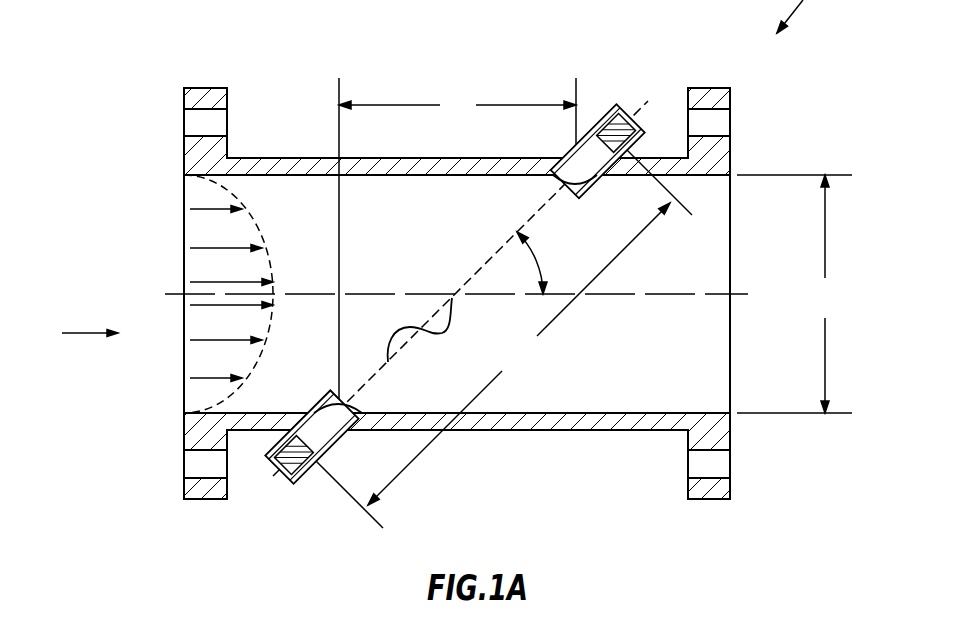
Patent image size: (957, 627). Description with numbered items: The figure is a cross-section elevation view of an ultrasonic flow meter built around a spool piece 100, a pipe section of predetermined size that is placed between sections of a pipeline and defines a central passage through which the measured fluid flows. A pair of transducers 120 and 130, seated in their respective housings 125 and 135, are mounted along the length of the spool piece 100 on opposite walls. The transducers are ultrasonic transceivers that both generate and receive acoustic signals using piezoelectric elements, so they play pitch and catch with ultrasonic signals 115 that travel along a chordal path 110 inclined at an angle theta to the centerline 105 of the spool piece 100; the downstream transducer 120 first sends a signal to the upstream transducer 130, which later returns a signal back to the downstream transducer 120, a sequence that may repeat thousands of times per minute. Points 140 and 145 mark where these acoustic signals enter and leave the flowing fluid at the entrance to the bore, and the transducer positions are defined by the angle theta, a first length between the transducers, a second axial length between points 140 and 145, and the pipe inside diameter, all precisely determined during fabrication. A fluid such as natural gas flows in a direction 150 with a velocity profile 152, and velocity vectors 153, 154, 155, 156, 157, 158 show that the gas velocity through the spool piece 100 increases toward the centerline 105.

The spool piece 100 is at (200, 88).
The centerline 105 is at (735, 293).
The chordal path 110 is at (497, 252).
The ultrasonic signals 115 is at (427, 338).
The downstream transducer 120 is at (643, 93).
The transducer housing 125 is at (603, 108).
The upstream transducer 130 is at (290, 480).
The transducer housing 135 is at (326, 446).
The entry point 140 is at (573, 178).
The entry point 145 is at (338, 406).
The flow direction 150 is at (93, 337).
The velocity profile 152 is at (250, 214).
The velocity vector 153 is at (205, 209).
The velocity vector 154 is at (203, 248).
The velocity vector 155 is at (203, 282).
The velocity vector 156 is at (203, 305).
The velocity vector 157 is at (203, 340).
The velocity vector 158 is at (203, 378).